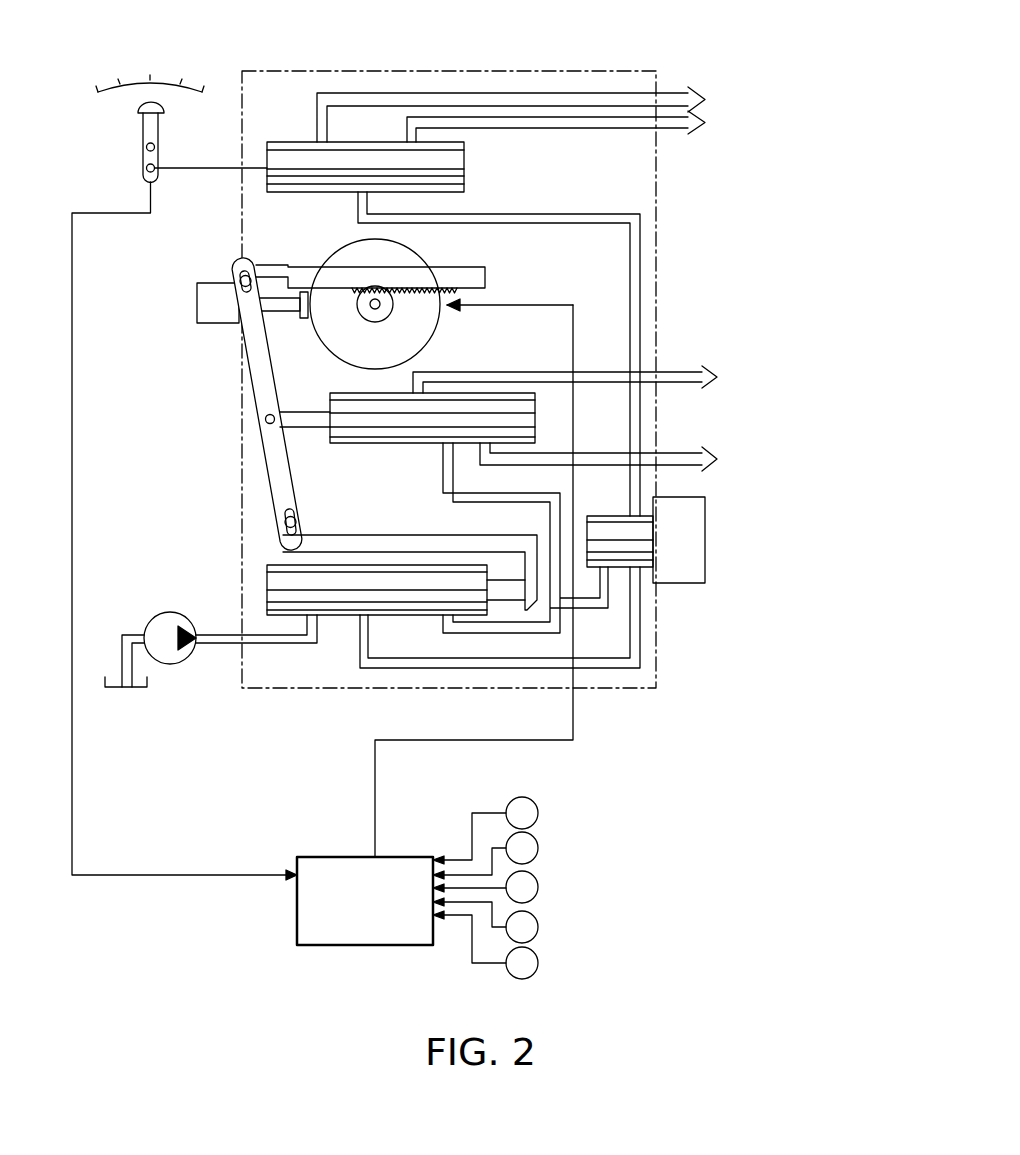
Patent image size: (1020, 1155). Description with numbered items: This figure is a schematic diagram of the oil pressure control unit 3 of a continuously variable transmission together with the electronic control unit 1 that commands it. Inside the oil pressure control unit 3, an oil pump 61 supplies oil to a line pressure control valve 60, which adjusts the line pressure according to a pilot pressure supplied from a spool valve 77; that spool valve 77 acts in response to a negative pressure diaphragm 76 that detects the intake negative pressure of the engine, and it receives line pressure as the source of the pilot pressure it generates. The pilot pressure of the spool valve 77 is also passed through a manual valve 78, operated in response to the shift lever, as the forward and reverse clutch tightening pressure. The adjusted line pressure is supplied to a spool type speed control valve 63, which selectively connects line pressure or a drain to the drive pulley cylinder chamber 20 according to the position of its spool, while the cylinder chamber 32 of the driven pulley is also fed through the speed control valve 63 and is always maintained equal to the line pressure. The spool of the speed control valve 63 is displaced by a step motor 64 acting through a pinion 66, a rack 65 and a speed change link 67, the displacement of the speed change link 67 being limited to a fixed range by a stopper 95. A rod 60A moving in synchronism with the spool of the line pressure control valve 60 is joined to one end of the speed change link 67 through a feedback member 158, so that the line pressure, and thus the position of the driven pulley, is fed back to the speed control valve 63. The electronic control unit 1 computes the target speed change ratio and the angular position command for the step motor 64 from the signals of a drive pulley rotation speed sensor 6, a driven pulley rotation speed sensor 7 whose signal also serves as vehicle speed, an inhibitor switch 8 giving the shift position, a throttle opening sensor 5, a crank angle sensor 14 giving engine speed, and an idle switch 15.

The electronic control unit 1 is at (334, 857).
The oil pressure control unit 3 is at (484, 72).
The throttle opening sensor 5 is at (538, 879).
The drive pulley rotation speed sensor 6 is at (538, 803).
The driven pulley rotation speed sensor 7 is at (538, 842).
The inhibitor switch 8 is at (147, 147).
The crank angle sensor 14 is at (538, 929).
The idle switch 15 is at (538, 962).
The drive pulley cylinder chamber 20 is at (741, 377).
The cylinder chamber of the driven pulley 32 is at (741, 460).
The line pressure control valve 60 is at (352, 600).
The rod 60A is at (508, 583).
The oil pump 61 is at (170, 622).
The speed control valve 63 is at (378, 430).
The step motor 64 is at (440, 335).
The rack 65 is at (425, 293).
The pinion 66 is at (370, 318).
The speed change link 67 is at (258, 346).
The negative pressure diaphragm 76 is at (690, 578).
The spool valve 77 is at (602, 524).
The manual valve 78 is at (464, 165).
The stopper 95 is at (199, 300).
The feedback member 158 is at (373, 542).